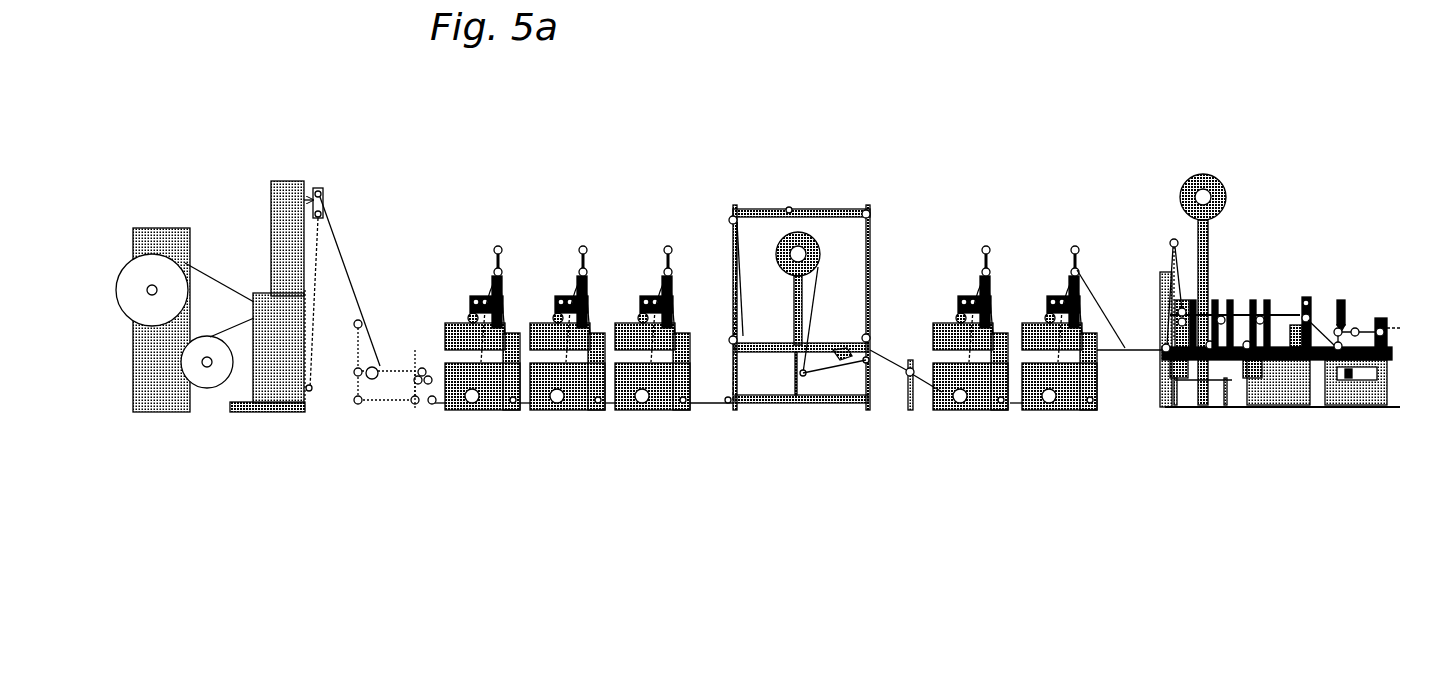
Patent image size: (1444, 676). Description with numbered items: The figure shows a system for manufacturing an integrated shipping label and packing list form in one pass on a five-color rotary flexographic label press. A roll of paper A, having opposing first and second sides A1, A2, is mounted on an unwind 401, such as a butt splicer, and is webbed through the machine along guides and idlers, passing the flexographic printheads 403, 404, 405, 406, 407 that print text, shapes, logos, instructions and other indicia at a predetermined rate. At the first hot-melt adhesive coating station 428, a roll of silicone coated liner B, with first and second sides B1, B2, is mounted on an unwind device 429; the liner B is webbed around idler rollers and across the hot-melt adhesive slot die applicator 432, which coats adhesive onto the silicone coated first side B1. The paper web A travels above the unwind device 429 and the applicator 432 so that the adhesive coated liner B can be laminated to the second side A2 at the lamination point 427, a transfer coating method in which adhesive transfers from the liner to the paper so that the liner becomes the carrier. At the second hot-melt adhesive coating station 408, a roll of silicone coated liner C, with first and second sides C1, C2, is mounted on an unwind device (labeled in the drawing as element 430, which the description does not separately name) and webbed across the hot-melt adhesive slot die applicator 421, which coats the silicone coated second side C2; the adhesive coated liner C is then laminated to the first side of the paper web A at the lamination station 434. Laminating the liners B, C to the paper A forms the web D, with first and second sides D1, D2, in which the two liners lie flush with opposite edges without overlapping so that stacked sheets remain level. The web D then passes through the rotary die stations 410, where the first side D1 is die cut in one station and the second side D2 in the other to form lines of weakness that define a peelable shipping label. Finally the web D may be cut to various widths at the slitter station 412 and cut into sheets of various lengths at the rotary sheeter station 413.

The unwind 401 is at (161, 218).
The flexographic printhead 403 is at (498, 236).
The flexographic printhead 404 is at (583, 236).
The flexographic printhead 405 is at (668, 236).
The flexographic printhead 406 is at (988, 236).
The flexographic printhead 407 is at (1075, 236).
The second hot-melt adhesive coating station 408 is at (1180, 180).
The rotary die stations 410 is at (1256, 298).
The slitter station 412 is at (1350, 316).
The rotary sheeter station 413 is at (1384, 318).
The hot-melt adhesive slot die applicator 421 is at (1165, 273).
The lamination point 427 is at (908, 380).
The first hot-melt adhesive coating station 428 is at (733, 206).
The unwind device 429 is at (793, 293).
The roll holder arm 430 is at (1207, 275).
The hot-melt adhesive slot die applicator 432 is at (838, 358).
The lamination station 434 is at (1177, 311).
The roll of paper A is at (196, 272).
The first side of paper web A1 is at (353, 283).
The second side of paper web A2 is at (354, 308).
The silicone coated liner B is at (800, 232).
The first side of liner B1 is at (818, 290).
The second side of liner B2 is at (803, 318).
The silicone coated liner C is at (1203, 172).
The first side of liner C1 is at (1218, 228).
The second side of liner C2 is at (1187, 278).
The web D is at (1242, 320).
The first side of web D1 is at (1290, 312).
The second side of web D2 is at (1280, 316).